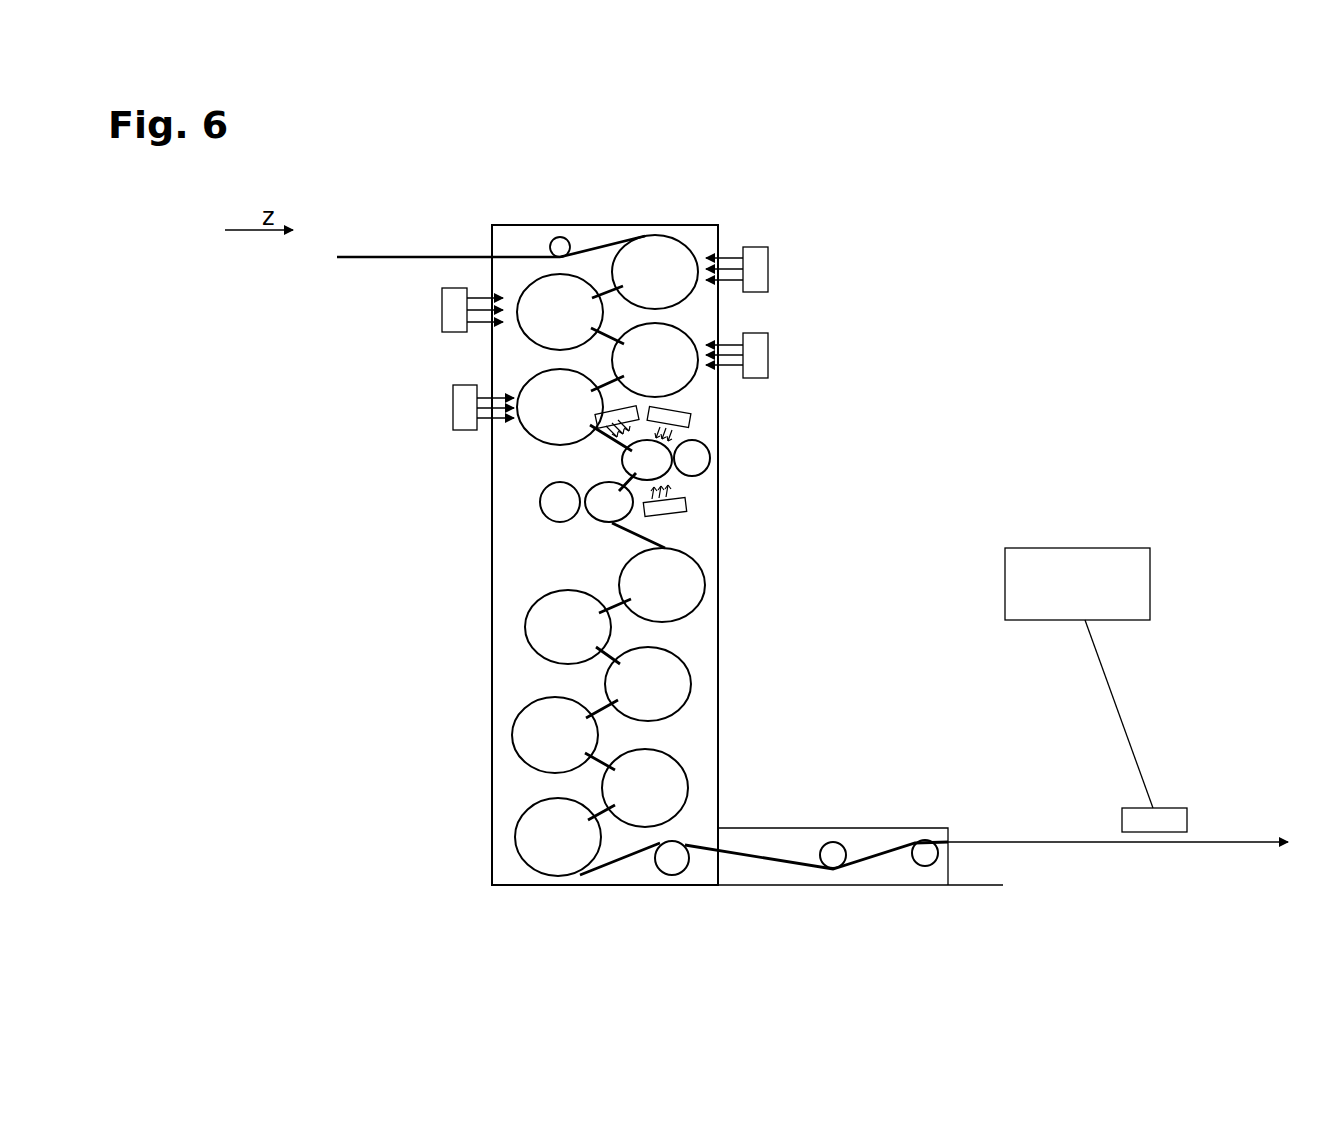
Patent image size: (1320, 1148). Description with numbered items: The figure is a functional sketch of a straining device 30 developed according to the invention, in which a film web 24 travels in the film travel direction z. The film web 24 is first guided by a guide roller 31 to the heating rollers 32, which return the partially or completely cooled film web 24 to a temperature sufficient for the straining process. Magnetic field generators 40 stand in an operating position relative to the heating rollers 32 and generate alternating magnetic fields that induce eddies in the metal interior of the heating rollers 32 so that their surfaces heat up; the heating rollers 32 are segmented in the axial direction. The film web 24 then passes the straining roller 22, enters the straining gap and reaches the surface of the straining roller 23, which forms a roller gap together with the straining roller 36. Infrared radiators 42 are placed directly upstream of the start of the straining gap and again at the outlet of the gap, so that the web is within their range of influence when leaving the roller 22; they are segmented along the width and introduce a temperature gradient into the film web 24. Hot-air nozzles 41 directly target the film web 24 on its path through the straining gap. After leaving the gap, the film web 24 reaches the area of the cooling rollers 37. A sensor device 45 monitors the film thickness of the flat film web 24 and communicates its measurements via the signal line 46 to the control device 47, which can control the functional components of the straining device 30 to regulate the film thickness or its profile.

The straining roller 22 is at (636, 473).
The straining roller 23 is at (598, 515).
The film web 24 is at (420, 255).
The straining device 30 is at (782, 261).
The guide roller 31 is at (569, 242).
The heating roller 32 is at (575, 422).
The straining roller 36 is at (557, 505).
The cooling roller 37 is at (573, 852).
The magnetic field generator 40 is at (462, 405).
The hot-air nozzle 41 is at (597, 460).
The infrared radiator 42 is at (688, 413).
The sensor device 45 is at (1168, 818).
The signal line 46 is at (1122, 712).
The control device 47 is at (1117, 558).